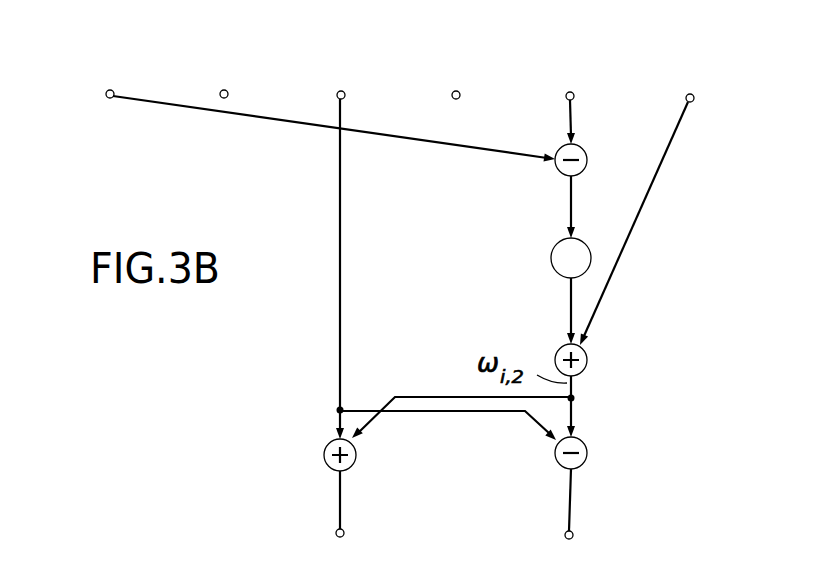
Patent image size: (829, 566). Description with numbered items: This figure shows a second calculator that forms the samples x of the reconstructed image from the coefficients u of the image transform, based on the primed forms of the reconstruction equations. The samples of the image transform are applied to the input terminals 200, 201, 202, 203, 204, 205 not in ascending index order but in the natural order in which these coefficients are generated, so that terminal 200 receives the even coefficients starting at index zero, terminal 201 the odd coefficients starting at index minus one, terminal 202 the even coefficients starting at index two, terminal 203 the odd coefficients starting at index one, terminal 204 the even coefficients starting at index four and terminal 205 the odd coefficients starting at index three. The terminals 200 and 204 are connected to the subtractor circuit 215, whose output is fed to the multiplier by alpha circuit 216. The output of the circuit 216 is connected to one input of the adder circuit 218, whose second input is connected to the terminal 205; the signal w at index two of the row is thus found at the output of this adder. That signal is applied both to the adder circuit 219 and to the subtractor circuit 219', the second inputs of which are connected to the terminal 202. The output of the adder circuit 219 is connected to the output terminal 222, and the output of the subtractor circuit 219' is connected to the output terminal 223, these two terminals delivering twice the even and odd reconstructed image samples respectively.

The terminal 200 is at (116, 84).
The terminal 201 is at (224, 90).
The terminal 202 is at (340, 91).
The terminal 203 is at (455, 91).
The terminal 204 is at (569, 92).
The terminal 205 is at (690, 94).
The subtractor circuit 215 is at (587, 160).
The multiplier by alpha circuit 216 is at (556, 246).
The adder circuit 218 is at (587, 360).
The adder circuit 219 is at (354, 448).
The subtractor circuit 219' is at (586, 439).
The output terminal 222 is at (336, 533).
The output terminal 223 is at (573, 533).